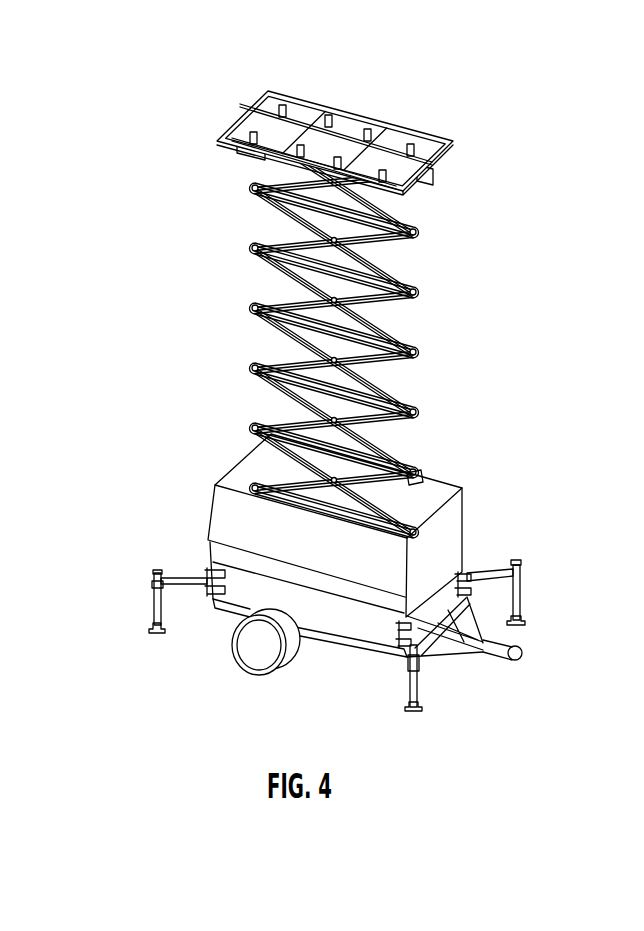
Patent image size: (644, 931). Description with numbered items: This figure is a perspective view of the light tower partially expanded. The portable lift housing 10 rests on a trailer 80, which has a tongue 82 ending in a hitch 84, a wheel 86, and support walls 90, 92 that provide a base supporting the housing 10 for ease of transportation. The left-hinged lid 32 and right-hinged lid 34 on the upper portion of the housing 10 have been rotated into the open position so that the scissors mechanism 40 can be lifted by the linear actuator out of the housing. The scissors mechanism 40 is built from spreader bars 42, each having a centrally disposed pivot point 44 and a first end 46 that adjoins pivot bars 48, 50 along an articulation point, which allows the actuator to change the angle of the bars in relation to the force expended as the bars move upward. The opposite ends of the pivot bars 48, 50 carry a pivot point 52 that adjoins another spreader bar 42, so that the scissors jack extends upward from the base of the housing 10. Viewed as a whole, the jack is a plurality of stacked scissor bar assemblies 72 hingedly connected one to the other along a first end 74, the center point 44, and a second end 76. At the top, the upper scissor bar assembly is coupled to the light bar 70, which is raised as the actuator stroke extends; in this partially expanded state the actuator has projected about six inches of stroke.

The portable lift housing 10 is at (339, 581).
The left-hinged lid 32 is at (376, 568).
The right-hinged lid 34 is at (464, 518).
The scissors mechanism 40 is at (329, 333).
The spreader bar 42 is at (392, 358).
The pivot point 44 is at (333, 303).
The first end 46 is at (425, 352).
The pivot bar 48 is at (400, 334).
The pivot bar 50 is at (418, 351).
The pivot point 52 is at (253, 251).
The light bar 70 is at (458, 150).
The scissor bar assembly 72 is at (423, 200).
The first end 74 is at (252, 368).
The second end 76 is at (424, 409).
The trailer 80 is at (368, 656).
The tongue 82 is at (481, 653).
The hitch 84 is at (521, 660).
The wheel 86 is at (232, 648).
The support wall 90 is at (338, 640).
The support wall 92 is at (473, 622).